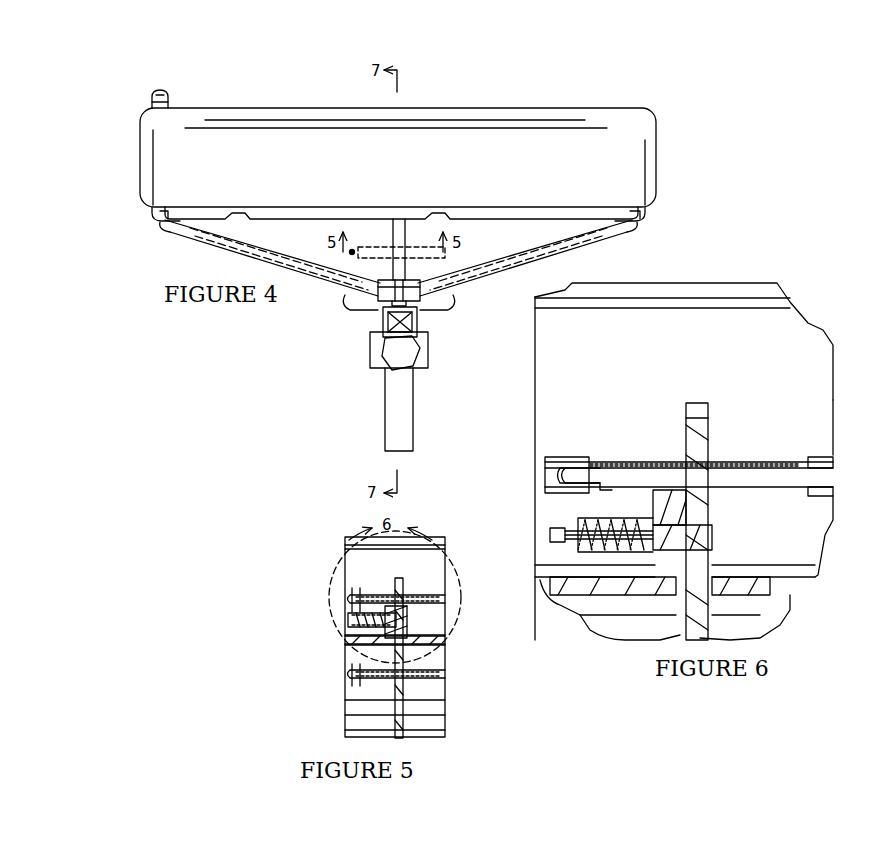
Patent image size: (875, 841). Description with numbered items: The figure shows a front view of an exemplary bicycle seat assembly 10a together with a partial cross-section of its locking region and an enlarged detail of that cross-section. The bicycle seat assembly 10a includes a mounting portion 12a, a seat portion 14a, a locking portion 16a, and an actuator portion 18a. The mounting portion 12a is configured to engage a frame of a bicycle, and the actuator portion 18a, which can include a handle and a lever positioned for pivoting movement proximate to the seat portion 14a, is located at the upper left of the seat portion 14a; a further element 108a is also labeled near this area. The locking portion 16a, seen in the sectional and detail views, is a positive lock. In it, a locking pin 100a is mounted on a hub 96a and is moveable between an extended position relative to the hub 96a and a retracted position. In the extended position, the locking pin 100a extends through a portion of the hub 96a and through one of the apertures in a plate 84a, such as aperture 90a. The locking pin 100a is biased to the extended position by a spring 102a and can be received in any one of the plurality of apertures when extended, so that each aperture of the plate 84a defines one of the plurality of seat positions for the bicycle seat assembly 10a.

In FIG. 4, the bicycle seat assembly 10a is at (652, 82).
In FIG. 4, the mounting portion 12a is at (283, 368).
In FIG. 4, the seat portion 14a is at (528, 103).
In FIG. 4, the locking portion 16a is at (310, 301).
In FIG. 5, the locking portion 16a is at (224, 615).
In FIG. 6, the locking portion 16a is at (720, 280).
In FIG. 4, the actuator portion 18a is at (146, 77).
In FIG. 4, the antenna mount 108a is at (175, 100).
In FIG. 5, the plate 84a is at (397, 598).
In FIG. 6, the plate 84a is at (705, 470).
In FIG. 6, the aperture 90a is at (735, 520).
In FIG. 5, the hub 96a is at (395, 615).
In FIG. 6, the hub 96a is at (682, 602).
In FIG. 5, the locking pin 100a is at (350, 622).
In FIG. 6, the locking pin 100a is at (660, 540).
In FIG. 6, the spring 102a is at (612, 520).